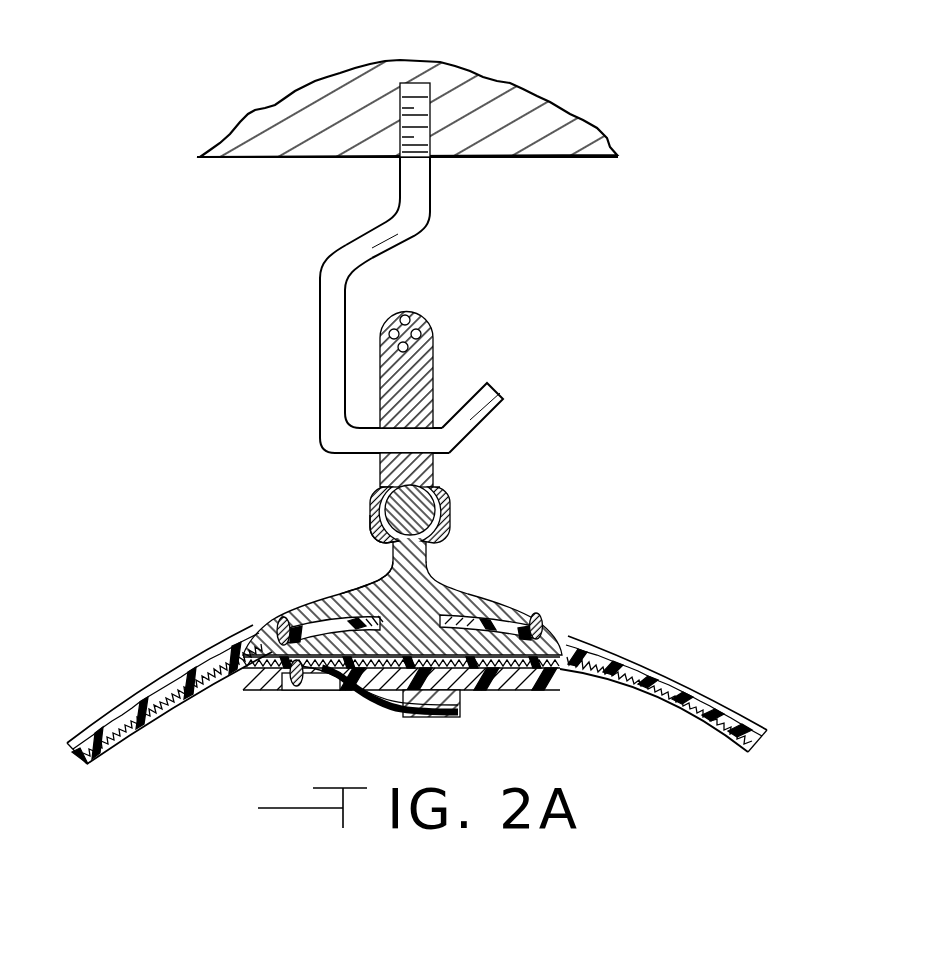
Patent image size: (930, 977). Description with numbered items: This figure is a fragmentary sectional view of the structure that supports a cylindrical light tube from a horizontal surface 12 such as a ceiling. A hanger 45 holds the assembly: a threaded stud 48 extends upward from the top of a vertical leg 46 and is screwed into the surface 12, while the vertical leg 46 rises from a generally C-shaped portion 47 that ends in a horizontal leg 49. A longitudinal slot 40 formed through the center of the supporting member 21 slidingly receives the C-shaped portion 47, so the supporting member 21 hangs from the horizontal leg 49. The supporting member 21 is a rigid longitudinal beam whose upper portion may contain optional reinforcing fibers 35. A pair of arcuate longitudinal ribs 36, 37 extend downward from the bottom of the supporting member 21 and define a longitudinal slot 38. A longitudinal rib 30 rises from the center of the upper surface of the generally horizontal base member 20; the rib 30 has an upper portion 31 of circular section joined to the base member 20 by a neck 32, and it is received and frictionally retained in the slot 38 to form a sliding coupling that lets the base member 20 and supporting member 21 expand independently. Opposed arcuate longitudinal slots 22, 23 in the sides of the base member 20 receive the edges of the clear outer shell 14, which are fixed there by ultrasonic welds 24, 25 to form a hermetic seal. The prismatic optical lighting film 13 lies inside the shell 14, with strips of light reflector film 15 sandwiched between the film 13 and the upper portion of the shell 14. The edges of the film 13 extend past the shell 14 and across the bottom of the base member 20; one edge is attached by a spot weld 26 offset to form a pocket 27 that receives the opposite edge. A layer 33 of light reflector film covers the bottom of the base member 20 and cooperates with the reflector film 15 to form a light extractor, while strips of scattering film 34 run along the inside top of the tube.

The horizontal surface 12 is at (572, 207).
The threaded stud 48 is at (417, 88).
The vertical leg 46 is at (490, 203).
The hanger 45 is at (374, 305).
The C-shaped portion 47 is at (335, 367).
The horizontal leg 49 is at (517, 433).
The supporting member 21 is at (454, 375).
The reinforcing fibers 35 is at (477, 325).
The longitudinal slots 40 is at (520, 368).
The base member 20 is at (402, 582).
The neck 32 is at (400, 568).
The longitudinal rib 30 is at (507, 523).
The arcuate longitudinal rib 37 is at (413, 495).
The arcuate longitudinal rib 36 is at (370, 500).
The longitudinal slot 38 is at (306, 520).
The upper portion of rib 31 is at (423, 502).
The ultrasonic weld 24 is at (285, 620).
The ultrasonic weld 25 is at (532, 613).
The scattering film 34 is at (590, 730).
The pocket 27 is at (503, 740).
The layer of light reflector film 33 is at (335, 688).
The spot weld 26 is at (300, 690).
The longitudinal slot 22 is at (141, 710).
The outer shell 14 is at (100, 717).
The light reflector film 15 is at (158, 722).
The optical lighting film 13 is at (110, 785).
The longitudinal slot 23 is at (676, 597).